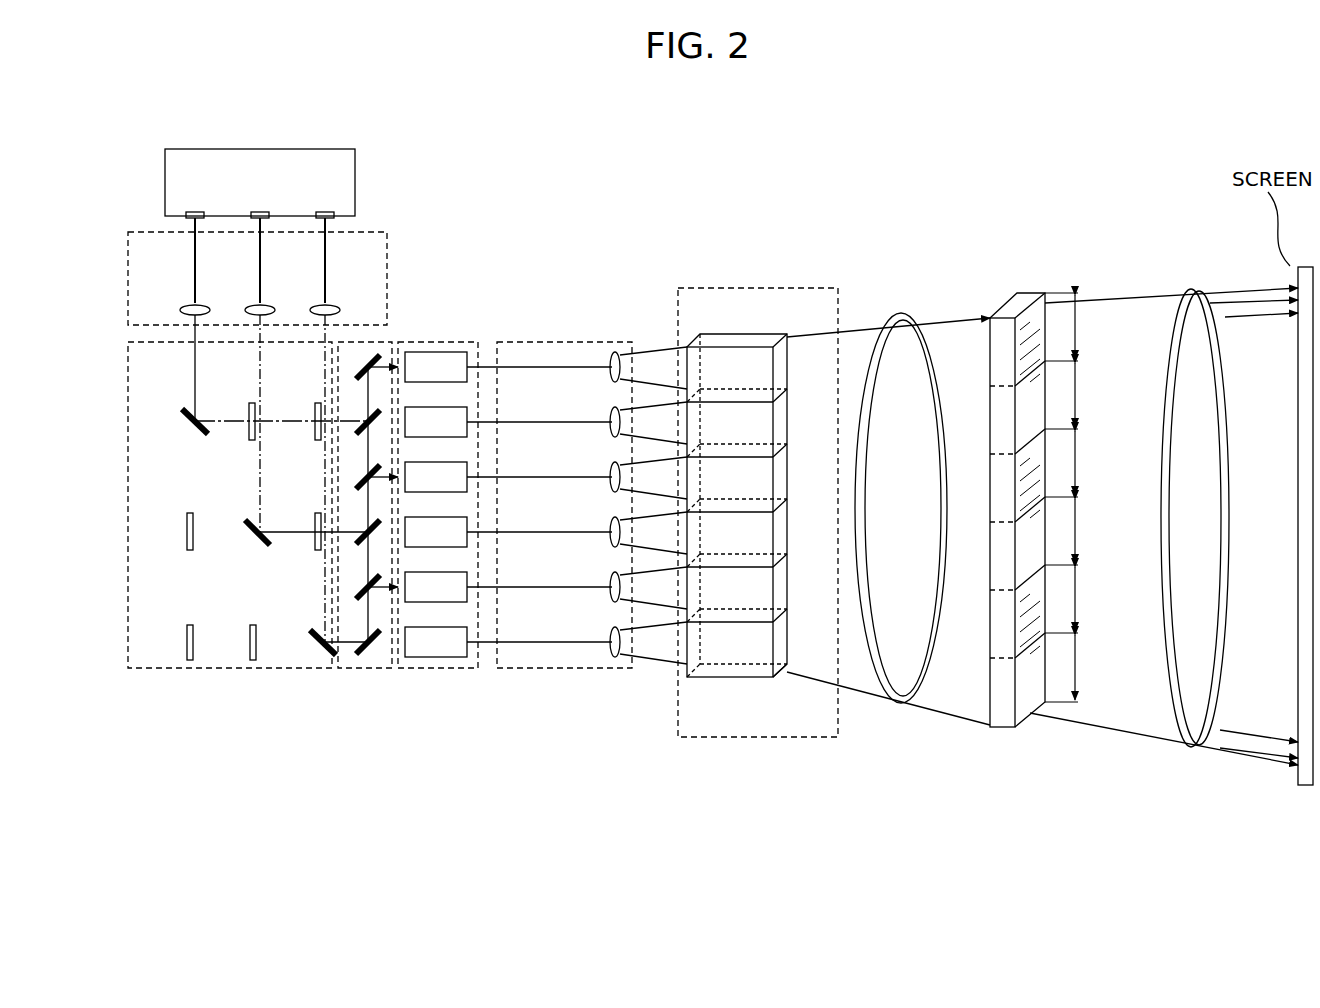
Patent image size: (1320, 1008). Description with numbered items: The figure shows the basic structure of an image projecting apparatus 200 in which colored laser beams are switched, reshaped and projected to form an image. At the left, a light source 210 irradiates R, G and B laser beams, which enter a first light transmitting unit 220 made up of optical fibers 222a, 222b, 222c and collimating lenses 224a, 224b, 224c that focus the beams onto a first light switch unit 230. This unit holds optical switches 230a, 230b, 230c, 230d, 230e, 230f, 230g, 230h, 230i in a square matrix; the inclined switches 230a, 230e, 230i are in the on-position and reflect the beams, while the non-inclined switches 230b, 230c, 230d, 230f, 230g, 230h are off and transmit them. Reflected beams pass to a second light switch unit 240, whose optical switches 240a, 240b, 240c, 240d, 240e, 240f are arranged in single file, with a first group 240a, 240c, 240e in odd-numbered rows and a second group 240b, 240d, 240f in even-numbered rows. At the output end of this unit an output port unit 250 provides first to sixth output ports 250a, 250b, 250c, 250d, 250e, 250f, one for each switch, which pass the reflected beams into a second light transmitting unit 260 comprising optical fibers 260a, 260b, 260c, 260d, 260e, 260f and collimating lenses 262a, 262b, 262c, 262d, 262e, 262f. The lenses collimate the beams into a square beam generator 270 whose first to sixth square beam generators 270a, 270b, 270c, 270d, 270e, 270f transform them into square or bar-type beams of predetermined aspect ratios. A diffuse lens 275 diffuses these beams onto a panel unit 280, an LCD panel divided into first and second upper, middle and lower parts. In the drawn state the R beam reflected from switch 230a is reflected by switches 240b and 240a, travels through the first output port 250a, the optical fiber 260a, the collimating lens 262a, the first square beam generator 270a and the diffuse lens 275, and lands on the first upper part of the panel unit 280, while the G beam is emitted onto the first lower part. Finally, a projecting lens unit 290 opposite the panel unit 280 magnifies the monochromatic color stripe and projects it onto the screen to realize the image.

The image projecting apparatus 200 is at (580, 166).
The light source 210 is at (262, 148).
The first light transmitting unit 220 is at (387, 270).
The optical fiber 222a is at (195, 243).
The optical fiber 222b is at (260, 243).
The optical fiber 222c is at (325, 243).
The collimating lens 224a is at (200, 306).
The collimating lens 224b is at (265, 306).
The collimating lens 224c is at (330, 306).
The first light switch unit 230 is at (258, 668).
The optical switch 230a is at (195, 424).
The optical switch 230b is at (249, 430).
The optical switch 230c is at (315, 430).
The optical switch 230d is at (187, 540).
The optical switch 230e is at (256, 534).
The optical switch 230f is at (315, 540).
The optical switch 230g is at (187, 632).
The optical switch 230h is at (250, 632).
The optical switch 230i is at (315, 633).
The second light switch unit 240 is at (360, 668).
The optical switch 240a is at (375, 352).
The optical switch 240b is at (368, 418).
The optical switch 240c is at (368, 473).
The optical switch 240d is at (368, 528).
The optical switch 240e is at (368, 583).
The optical switch 240f is at (368, 638).
The output port unit 250 is at (420, 668).
The first output port 250a is at (410, 382).
The second output port 250b is at (410, 437).
The third output port 250c is at (410, 492).
The fourth output port 250d is at (410, 547).
The fifth output port 250e is at (410, 602).
The sixth output port 250f is at (440, 657).
The second light transmitting unit 260 is at (545, 668).
The optical fiber 260a is at (552, 370).
The optical fiber 260b is at (552, 425).
The optical fiber 260c is at (552, 480).
The optical fiber 260d is at (552, 535).
The optical fiber 260e is at (588, 590).
The optical fiber 260f is at (540, 640).
The collimating lens 262a is at (618, 352).
The collimating lens 262b is at (630, 405).
The collimating lens 262c is at (630, 460).
The collimating lens 262d is at (630, 515).
The collimating lens 262e is at (630, 570).
The collimating lens 262f is at (630, 625).
The square beam generator 270 is at (735, 288).
The first square beam generator 270a is at (778, 370).
The second square beam generator 270b is at (778, 423).
The third square beam generator 270c is at (778, 478).
The fourth square beam generator 270d is at (778, 533).
The fifth square beam generator 270e is at (778, 588).
The sixth square beam generator 270f is at (778, 643).
The diffuse lens 275 is at (905, 316).
The panel unit 280 is at (1020, 290).
The projecting lens unit 290 is at (1195, 290).